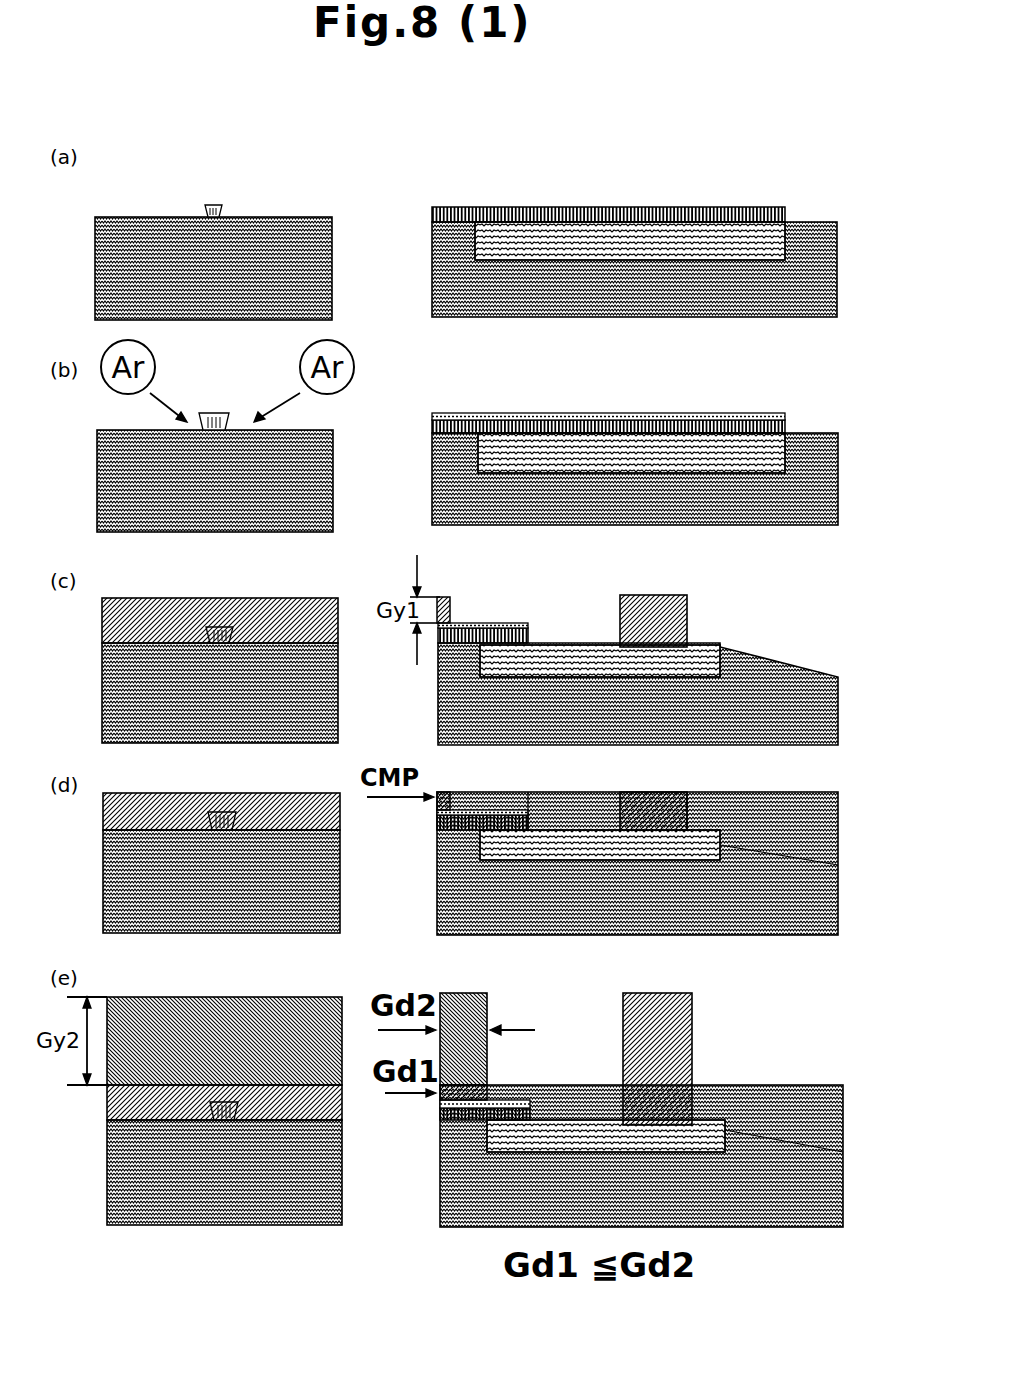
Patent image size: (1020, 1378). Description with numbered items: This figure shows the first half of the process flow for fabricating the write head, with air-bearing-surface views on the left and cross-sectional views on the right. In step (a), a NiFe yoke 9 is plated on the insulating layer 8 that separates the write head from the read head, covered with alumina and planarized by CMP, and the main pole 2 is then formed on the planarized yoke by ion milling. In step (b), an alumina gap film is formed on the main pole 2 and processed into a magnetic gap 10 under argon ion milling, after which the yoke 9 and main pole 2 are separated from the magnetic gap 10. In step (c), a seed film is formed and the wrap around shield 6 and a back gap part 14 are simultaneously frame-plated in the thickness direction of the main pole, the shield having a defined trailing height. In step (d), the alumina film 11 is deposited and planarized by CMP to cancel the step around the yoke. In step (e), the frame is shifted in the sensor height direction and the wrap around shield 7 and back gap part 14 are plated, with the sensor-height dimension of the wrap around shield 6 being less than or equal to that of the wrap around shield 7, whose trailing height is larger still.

The main pole 2 is at (332, 250).
The wrap around shield 6 is at (280, 598).
The wrap around shield 7 is at (268, 1005).
The insulating layer 8 is at (335, 302).
The yoke 9 is at (720, 243).
The magnetic gap 10 is at (212, 413).
The alumina film 11 is at (535, 797).
The back gap part 14 is at (690, 597).